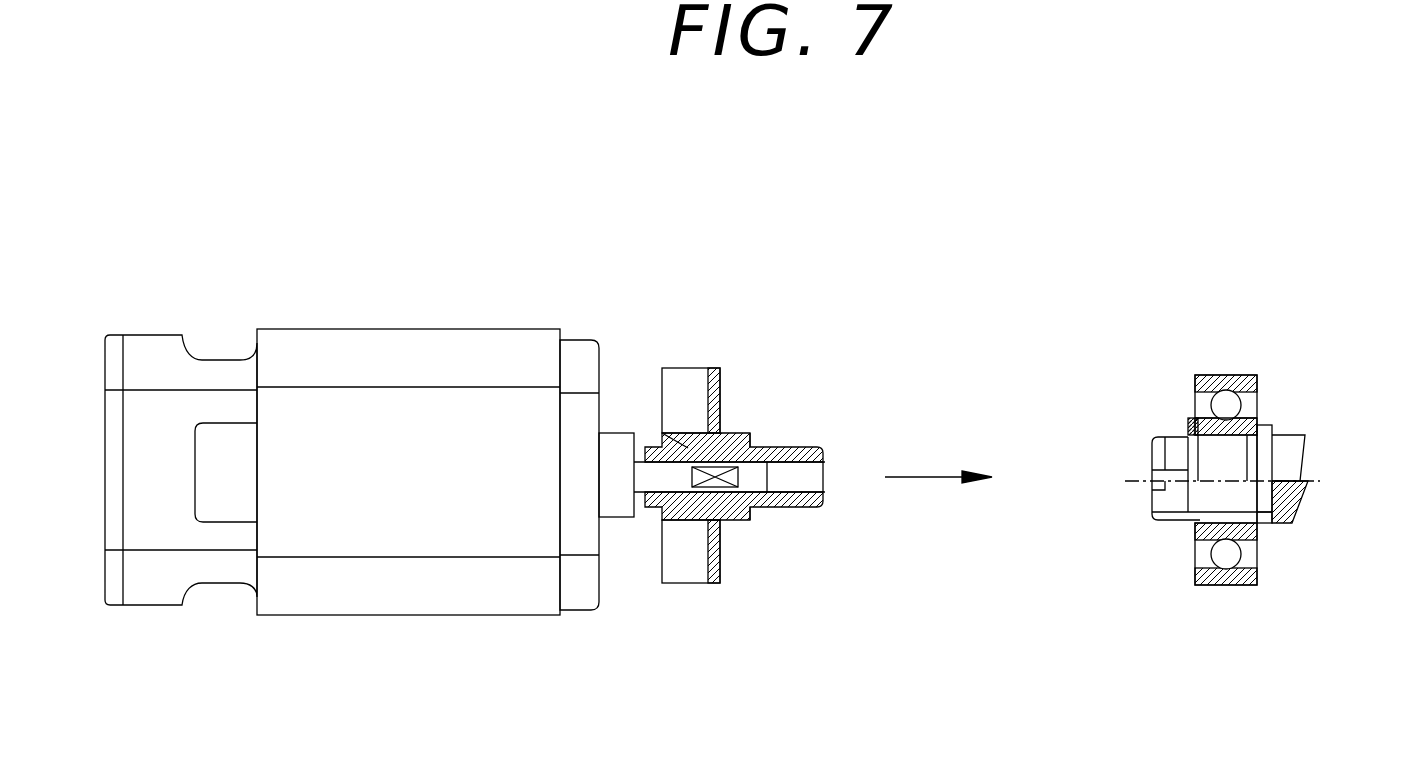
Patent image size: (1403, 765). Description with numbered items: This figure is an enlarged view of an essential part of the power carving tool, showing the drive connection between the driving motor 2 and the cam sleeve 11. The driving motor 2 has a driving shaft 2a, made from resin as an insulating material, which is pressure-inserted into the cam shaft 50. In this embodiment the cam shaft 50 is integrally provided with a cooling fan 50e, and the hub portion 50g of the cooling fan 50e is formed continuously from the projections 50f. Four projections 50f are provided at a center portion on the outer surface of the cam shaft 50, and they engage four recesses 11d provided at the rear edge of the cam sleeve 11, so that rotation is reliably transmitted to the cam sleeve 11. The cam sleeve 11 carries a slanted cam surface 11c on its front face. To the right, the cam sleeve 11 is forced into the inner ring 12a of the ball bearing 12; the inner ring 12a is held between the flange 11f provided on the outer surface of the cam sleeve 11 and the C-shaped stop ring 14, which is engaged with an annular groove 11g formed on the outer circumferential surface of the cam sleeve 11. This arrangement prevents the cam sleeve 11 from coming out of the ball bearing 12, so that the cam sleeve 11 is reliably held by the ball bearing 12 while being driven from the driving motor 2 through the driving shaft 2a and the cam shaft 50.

The driving motor 2 is at (392, 522).
The driving shaft 2a is at (663, 472).
The cam shaft 50 is at (810, 507).
The cooling fan 50e is at (690, 380).
The projections 50f is at (748, 432).
The hub portion 50g is at (688, 448).
The cam sleeve 11 is at (1280, 505).
The slanted cam surface 11c is at (1297, 517).
The recesses 11d is at (1153, 488).
The flange 11f is at (1262, 525).
The annular groove 11g is at (1205, 515).
The ball bearing 12 is at (1232, 587).
The inner ring 12a is at (1250, 430).
The C-shaped stop ring 14 is at (1187, 420).